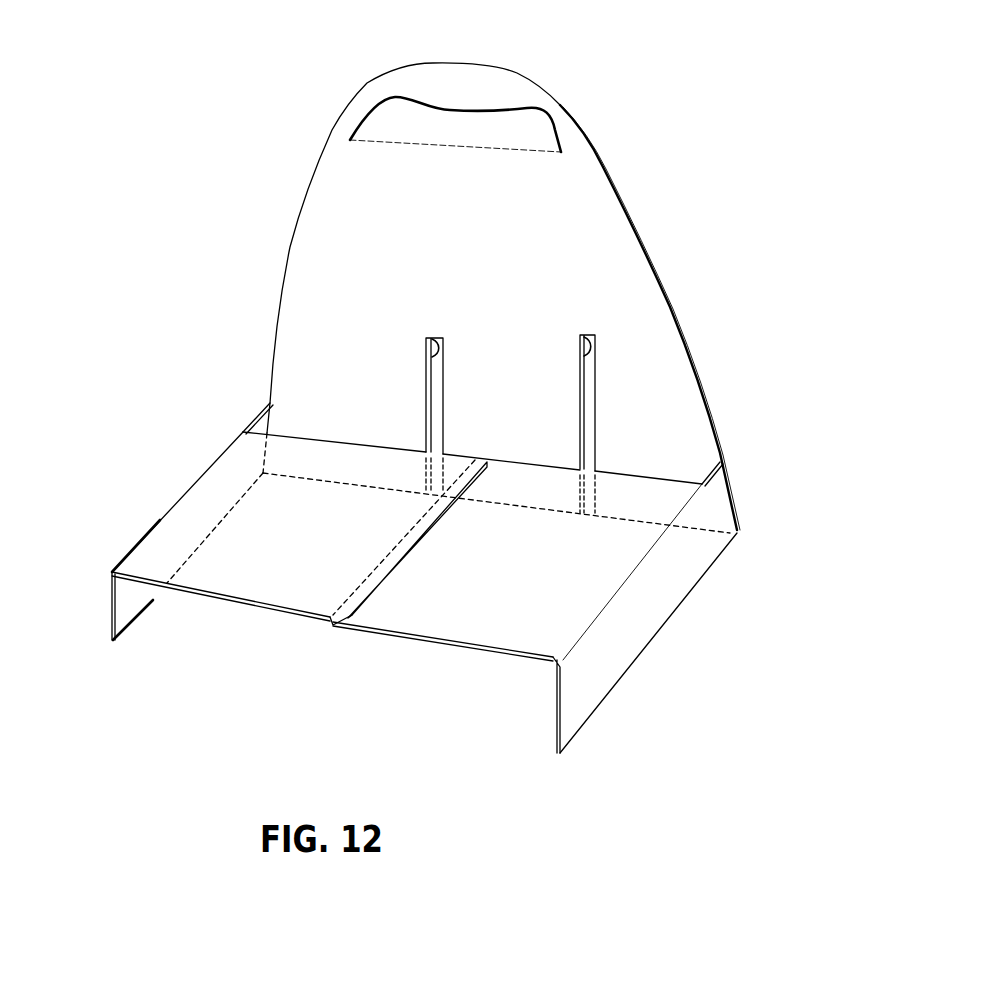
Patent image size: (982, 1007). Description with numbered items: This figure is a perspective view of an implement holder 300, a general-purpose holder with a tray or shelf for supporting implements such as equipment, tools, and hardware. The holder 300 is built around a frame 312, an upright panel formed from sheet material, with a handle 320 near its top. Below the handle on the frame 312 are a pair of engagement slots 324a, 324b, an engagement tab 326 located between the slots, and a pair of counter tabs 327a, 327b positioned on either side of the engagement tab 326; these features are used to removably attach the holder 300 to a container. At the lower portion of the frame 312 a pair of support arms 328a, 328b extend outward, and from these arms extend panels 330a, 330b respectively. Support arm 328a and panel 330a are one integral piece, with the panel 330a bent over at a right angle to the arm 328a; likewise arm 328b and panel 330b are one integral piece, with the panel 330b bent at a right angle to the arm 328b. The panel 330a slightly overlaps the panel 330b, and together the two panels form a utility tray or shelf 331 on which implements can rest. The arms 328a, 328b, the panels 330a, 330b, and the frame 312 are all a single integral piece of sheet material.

The implement holder 300 is at (265, 155).
The frame 312 is at (288, 246).
The handle 320 is at (480, 90).
The engagement slot 324a is at (432, 338).
The engagement slot 324b is at (587, 335).
The engagement tab 326 is at (527, 404).
The counter tab 327a is at (365, 389).
The counter tab 327b is at (672, 406).
The support arm 328a is at (108, 590).
The support arm 328b is at (617, 645).
The panel 330a is at (313, 539).
The panel 330b is at (550, 581).
The utility tray or shelf 331 is at (329, 634).